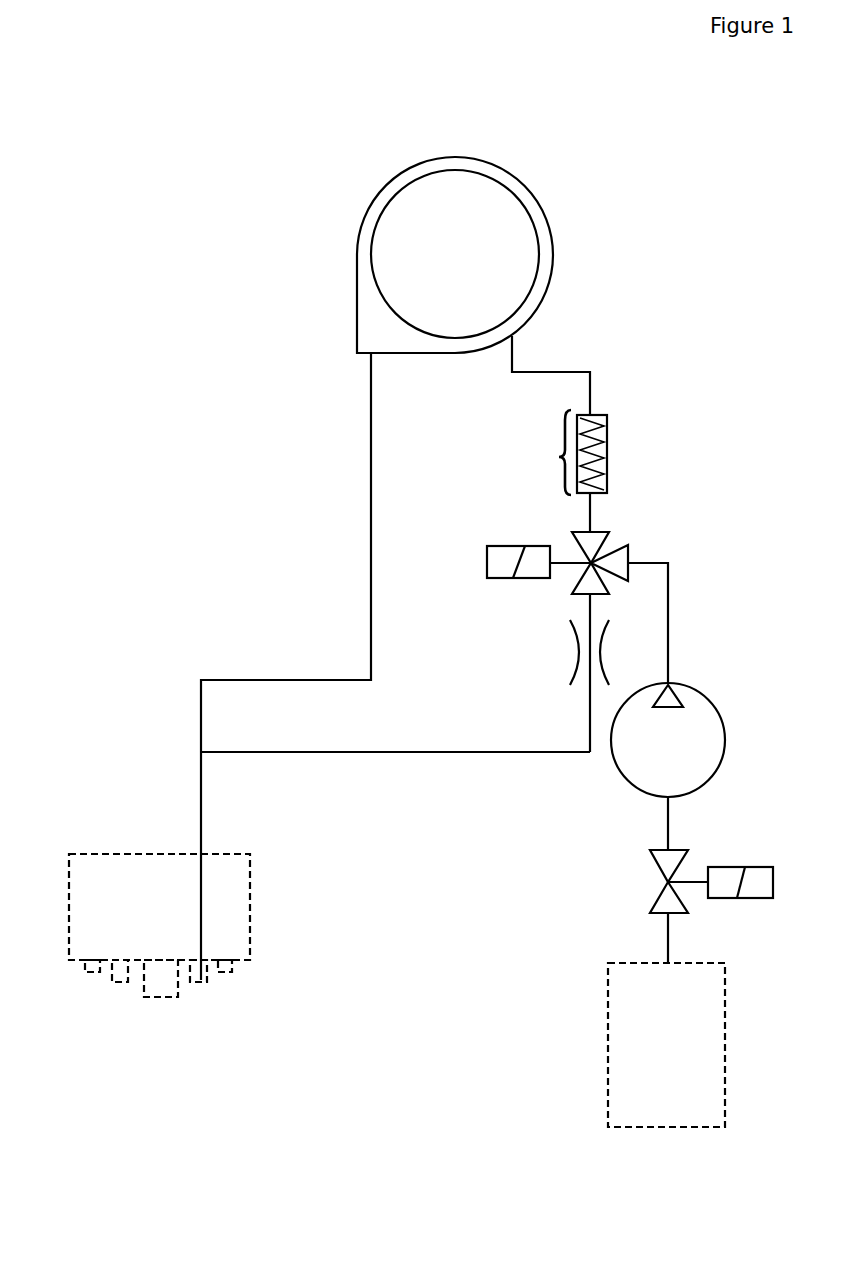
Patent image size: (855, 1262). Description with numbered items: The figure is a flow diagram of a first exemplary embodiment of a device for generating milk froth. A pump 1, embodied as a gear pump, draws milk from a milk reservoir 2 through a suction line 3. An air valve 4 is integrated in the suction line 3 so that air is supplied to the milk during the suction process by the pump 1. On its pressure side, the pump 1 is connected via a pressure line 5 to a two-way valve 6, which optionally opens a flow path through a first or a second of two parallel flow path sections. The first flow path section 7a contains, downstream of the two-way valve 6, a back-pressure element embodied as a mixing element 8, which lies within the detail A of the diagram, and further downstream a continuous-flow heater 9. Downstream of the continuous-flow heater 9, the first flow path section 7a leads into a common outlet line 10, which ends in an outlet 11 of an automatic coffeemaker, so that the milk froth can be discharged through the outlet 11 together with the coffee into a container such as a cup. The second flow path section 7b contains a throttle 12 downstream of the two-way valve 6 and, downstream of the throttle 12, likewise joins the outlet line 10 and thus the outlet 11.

The pump 1 is at (668, 740).
The milk reservoir 2 is at (666, 1020).
The suction line 3 is at (672, 823).
The air valve 4 is at (773, 882).
The pressure line 5 is at (672, 666).
The two-way valve 6 is at (620, 537).
The first flow path section 7a is at (358, 572).
The second flow path section 7b is at (484, 765).
The mixing element 8 is at (622, 463).
The continuous-flow heater 9 is at (455, 255).
The outlet line 10 is at (197, 805).
The outlet 11 is at (202, 987).
The throttle 12 is at (565, 650).
The detail A is at (549, 452).